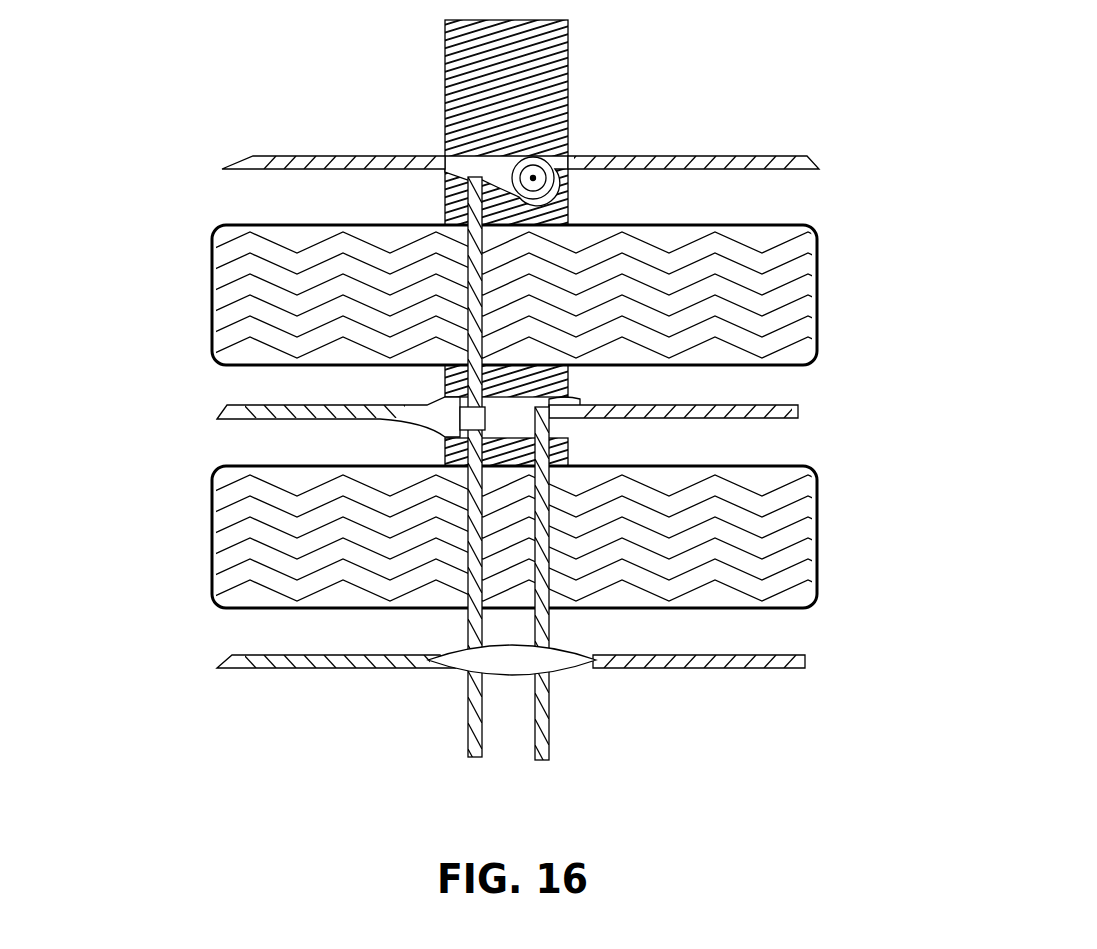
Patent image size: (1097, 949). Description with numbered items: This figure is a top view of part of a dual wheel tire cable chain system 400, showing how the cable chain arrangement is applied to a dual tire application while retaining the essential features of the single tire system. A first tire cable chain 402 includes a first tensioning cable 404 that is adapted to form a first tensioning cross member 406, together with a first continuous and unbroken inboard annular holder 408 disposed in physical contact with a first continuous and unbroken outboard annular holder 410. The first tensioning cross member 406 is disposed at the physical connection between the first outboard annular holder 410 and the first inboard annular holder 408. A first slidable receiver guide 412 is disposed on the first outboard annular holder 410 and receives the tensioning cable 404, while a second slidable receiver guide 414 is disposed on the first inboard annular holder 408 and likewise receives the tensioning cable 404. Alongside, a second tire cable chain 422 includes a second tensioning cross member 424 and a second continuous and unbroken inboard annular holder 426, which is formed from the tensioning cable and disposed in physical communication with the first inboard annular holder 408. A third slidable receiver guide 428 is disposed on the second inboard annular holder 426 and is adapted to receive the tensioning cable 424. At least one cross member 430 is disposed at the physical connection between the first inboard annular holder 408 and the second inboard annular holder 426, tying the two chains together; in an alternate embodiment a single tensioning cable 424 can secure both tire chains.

The dual wheel tire cable chain system 400 is at (160, 143).
The first tire cable chain 402 is at (840, 557).
The first tensioning cable 404 is at (550, 735).
The first tensioning cross member 406 is at (553, 540).
The first inboard annular holder 408 is at (205, 383).
The first outboard annular holder 410 is at (255, 690).
The first slidable receiver guide 412 is at (463, 660).
The second slidable receiver guide 414 is at (567, 426).
The second tire cable chain 422 is at (767, 115).
The second tensioning cross member 424 is at (460, 205).
The second inboard annular holder 426 is at (330, 159).
The third slidable receiver guide 428 is at (482, 168).
The cross member 430 is at (488, 283).